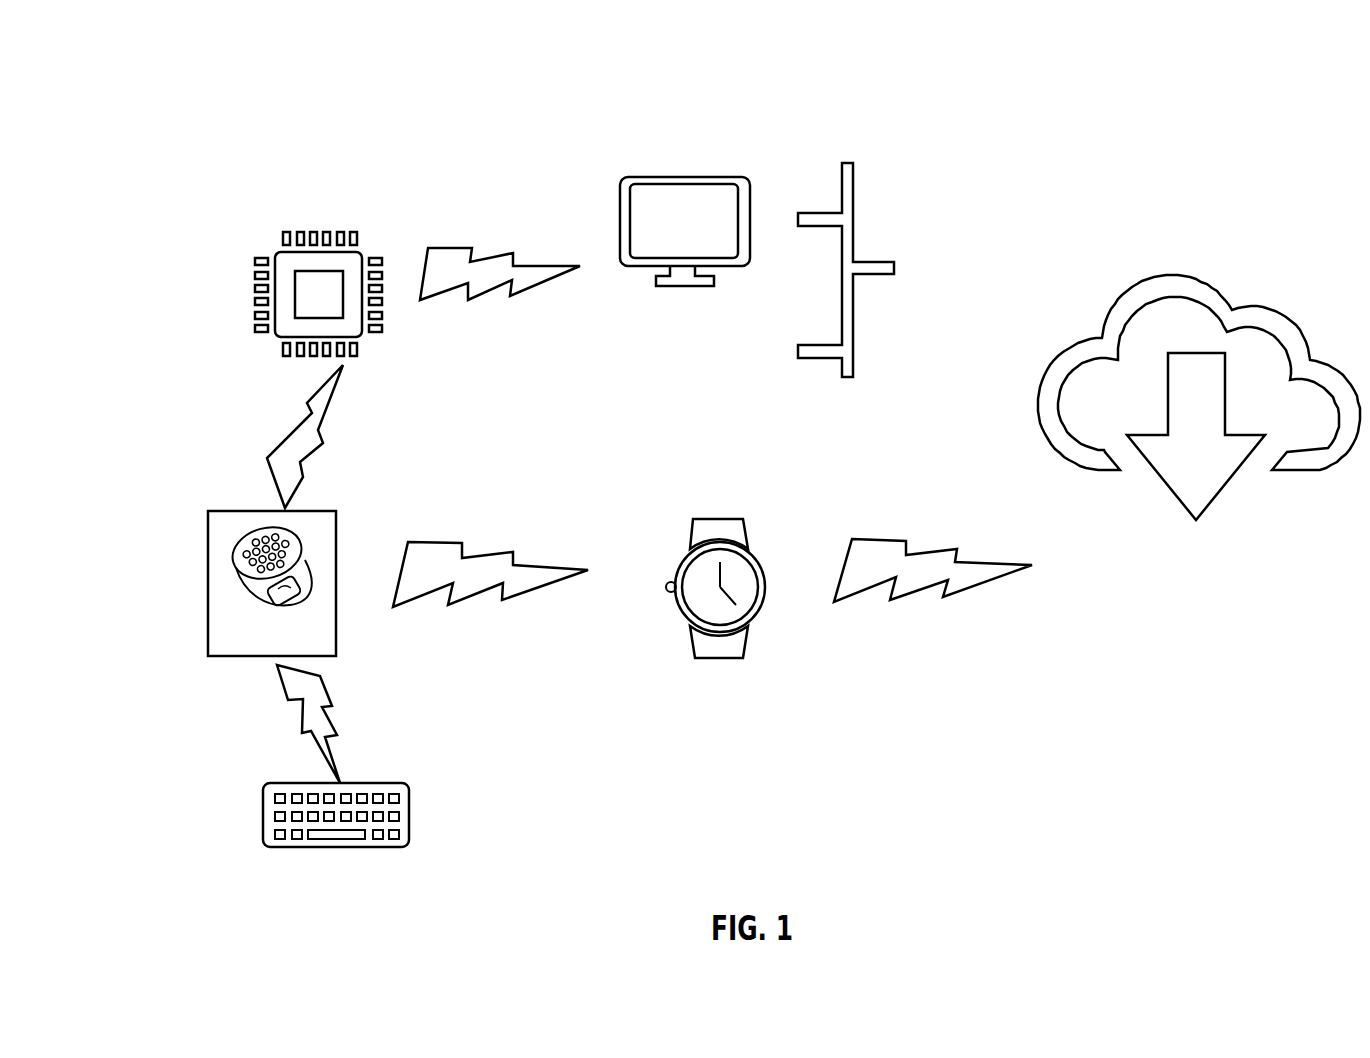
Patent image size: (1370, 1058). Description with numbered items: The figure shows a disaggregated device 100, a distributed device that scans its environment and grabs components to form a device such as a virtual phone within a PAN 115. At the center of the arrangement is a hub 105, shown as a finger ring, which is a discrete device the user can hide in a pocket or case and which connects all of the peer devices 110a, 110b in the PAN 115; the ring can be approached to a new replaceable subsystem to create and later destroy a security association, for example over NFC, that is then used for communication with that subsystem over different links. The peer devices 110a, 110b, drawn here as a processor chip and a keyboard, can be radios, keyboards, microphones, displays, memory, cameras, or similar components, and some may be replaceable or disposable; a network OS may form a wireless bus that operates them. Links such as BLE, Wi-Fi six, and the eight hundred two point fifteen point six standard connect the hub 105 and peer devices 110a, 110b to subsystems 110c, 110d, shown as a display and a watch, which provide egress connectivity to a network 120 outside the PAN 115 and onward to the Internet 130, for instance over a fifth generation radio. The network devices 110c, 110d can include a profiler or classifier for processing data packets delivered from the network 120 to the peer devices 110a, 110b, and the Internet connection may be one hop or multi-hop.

The disaggregated device 100 is at (136, 98).
The hub 105 is at (207, 562).
The peer device 110a is at (242, 285).
The peer device 110b is at (262, 812).
The subsystem 110c is at (656, 177).
The subsystem 110d is at (718, 660).
The PAN 115 is at (798, 120).
The network 120 is at (1369, 113).
The Internet 130 is at (1283, 320).